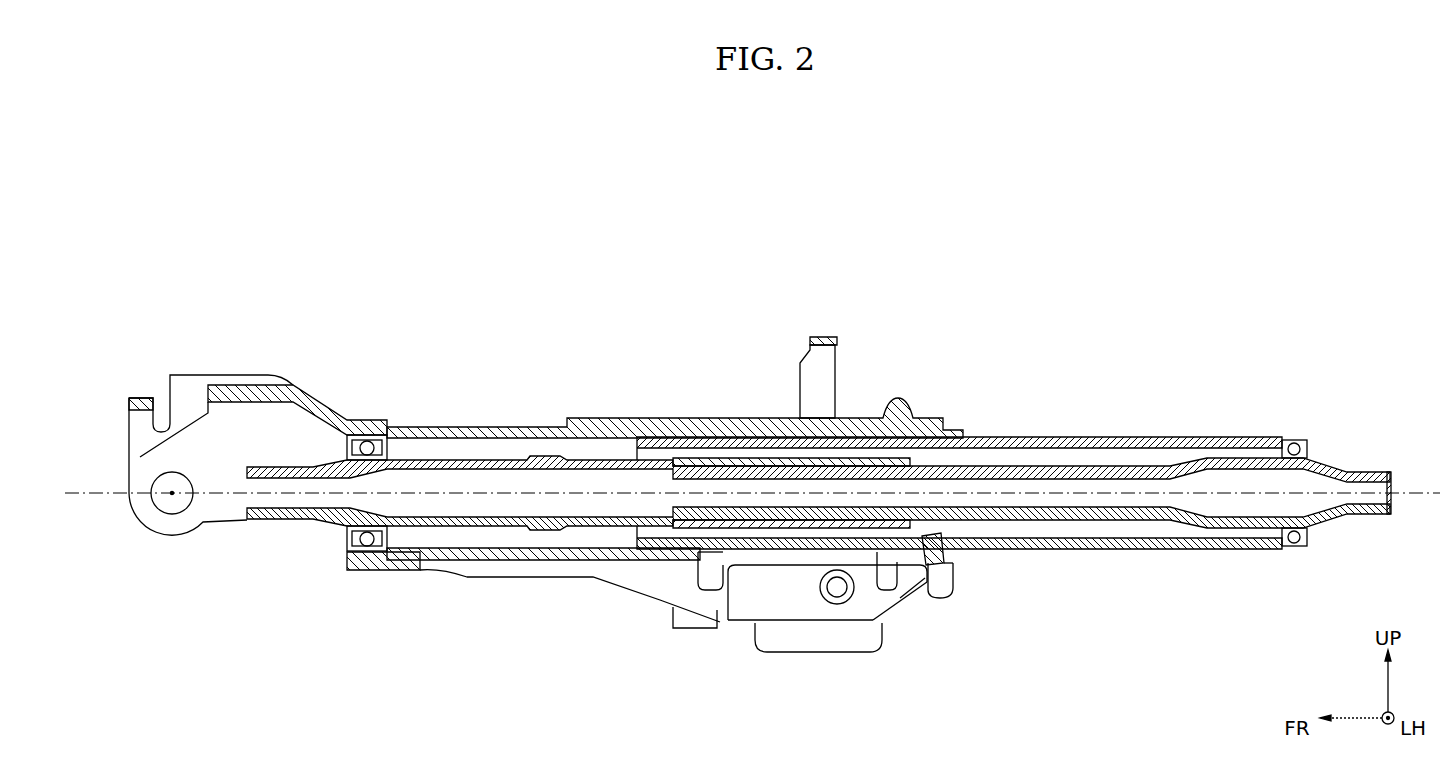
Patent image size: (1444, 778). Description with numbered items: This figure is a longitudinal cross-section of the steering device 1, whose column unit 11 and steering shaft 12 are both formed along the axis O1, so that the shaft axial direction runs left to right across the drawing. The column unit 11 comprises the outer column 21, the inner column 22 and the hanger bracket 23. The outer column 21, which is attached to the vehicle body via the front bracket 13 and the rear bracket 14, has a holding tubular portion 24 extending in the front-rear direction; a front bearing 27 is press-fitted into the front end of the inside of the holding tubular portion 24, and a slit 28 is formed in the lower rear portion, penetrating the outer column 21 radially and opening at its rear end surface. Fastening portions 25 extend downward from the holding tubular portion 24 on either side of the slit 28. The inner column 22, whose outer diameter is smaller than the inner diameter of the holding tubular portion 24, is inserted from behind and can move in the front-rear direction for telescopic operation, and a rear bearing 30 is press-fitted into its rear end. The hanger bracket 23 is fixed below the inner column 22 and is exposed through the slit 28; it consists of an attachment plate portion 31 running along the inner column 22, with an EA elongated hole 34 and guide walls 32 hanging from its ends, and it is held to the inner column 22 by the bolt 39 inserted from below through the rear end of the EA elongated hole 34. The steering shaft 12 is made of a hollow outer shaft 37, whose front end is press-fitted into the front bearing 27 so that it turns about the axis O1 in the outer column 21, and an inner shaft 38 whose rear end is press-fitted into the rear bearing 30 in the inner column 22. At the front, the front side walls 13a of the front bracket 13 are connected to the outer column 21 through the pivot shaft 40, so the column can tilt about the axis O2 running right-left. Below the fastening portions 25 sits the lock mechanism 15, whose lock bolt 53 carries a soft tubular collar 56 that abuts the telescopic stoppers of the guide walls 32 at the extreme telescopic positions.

The steering device 1 is at (1337, 341).
The column unit 11 is at (940, 272).
The steering shaft 12 is at (690, 272).
The front bracket 13 is at (227, 364).
The front side walls 13a is at (192, 395).
The rear bracket 14 is at (817, 323).
The lock mechanism 15 is at (773, 602).
The outer column 21 is at (935, 403).
The inner column 22 is at (1002, 424).
The hanger bracket 23 is at (966, 600).
The holding tubular portion 24 is at (860, 417).
The fastening portions 25 is at (740, 600).
The front bearing 27 is at (387, 413).
The slit 28 is at (592, 577).
The rear bearing 30 is at (1297, 547).
The attachment plate portion 31 is at (717, 557).
The guide walls 32 is at (928, 577).
The EA elongated hole 34 is at (887, 610).
The outer shaft 37 is at (713, 462).
The inner shaft 38 is at (760, 462).
The bolt 39 is at (953, 562).
The pivot shaft 40 is at (192, 515).
The lock bolt 53 is at (800, 591).
The collar 56 is at (840, 607).
The axis O1 is at (1412, 493).
The axis O2 is at (172, 500).